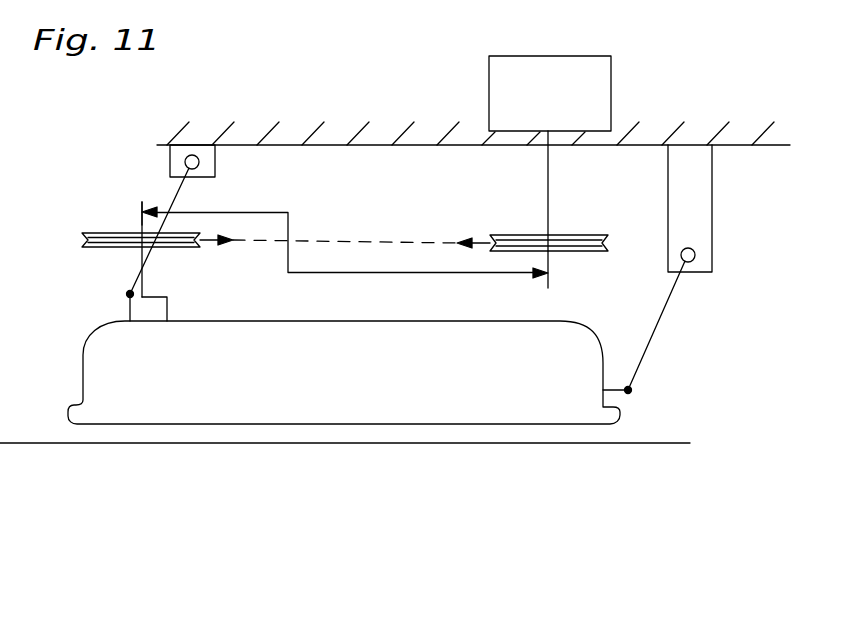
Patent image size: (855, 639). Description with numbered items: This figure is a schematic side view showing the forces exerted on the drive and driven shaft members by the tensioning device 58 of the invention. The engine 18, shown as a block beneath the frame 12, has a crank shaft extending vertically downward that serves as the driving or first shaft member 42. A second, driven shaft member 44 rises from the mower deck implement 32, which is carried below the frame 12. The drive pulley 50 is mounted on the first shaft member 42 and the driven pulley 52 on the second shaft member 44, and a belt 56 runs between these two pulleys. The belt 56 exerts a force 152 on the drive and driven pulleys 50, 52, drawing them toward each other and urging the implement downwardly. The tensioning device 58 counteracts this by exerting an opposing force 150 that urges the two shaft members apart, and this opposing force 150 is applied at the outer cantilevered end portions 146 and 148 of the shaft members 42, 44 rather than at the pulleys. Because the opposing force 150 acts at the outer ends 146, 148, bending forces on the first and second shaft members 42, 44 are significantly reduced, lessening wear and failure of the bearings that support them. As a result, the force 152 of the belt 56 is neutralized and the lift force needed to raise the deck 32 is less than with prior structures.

The frame 12 is at (385, 146).
The engine 18 is at (552, 101).
The mower deck implement 32 is at (341, 378).
The first shaft member 42 is at (548, 193).
The second shaft member 44 is at (143, 287).
The drive pulley 50 is at (585, 252).
The driven pulley 52 is at (103, 248).
The belt 56 is at (322, 237).
The tensioning device 58 is at (314, 283).
The outer end of drive shaft 146 is at (548, 284).
The outer end of driven shaft 148 is at (140, 220).
The opposing force 150 is at (220, 207).
The belt force 152 is at (210, 251).